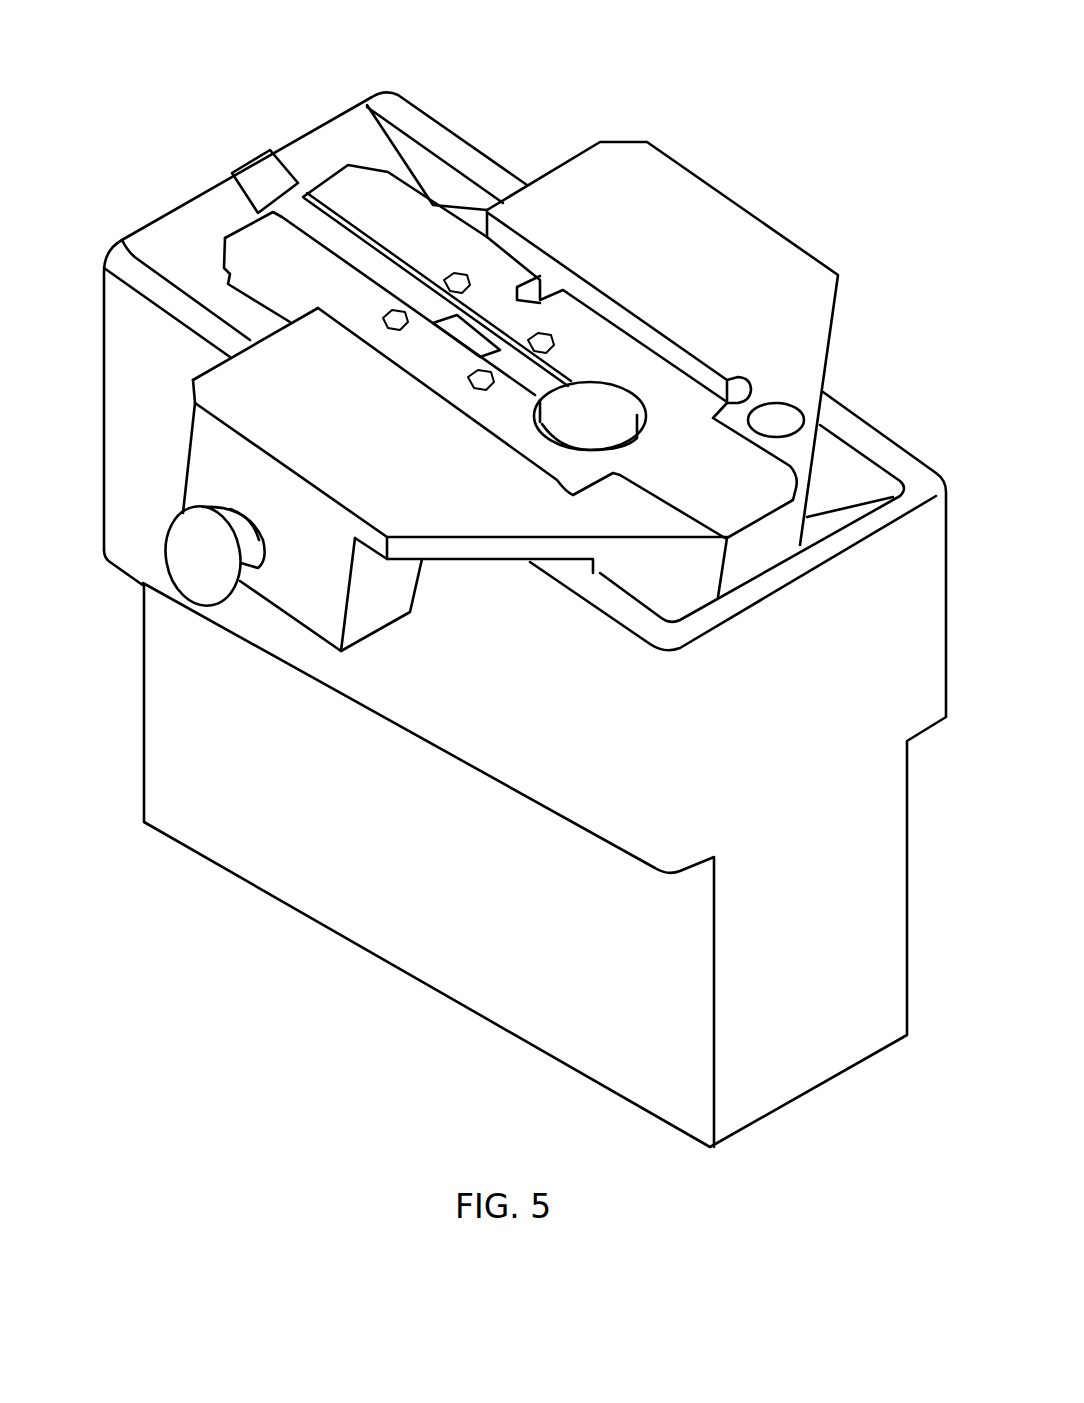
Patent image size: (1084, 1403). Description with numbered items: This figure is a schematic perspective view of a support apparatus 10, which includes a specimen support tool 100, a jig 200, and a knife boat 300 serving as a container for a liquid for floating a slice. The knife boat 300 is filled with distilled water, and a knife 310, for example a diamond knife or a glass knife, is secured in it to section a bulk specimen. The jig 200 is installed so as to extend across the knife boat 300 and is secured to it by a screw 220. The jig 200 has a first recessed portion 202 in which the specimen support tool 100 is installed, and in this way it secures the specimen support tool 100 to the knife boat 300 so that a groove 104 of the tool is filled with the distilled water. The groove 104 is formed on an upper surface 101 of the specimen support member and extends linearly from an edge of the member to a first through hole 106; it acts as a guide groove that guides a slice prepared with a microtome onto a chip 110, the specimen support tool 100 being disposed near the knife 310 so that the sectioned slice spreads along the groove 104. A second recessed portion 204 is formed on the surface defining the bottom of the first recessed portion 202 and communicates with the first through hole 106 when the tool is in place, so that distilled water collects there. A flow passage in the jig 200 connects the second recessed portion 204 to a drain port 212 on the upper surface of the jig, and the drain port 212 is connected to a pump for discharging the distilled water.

The support apparatus 10 is at (760, 72).
The specimen support tool 100 is at (400, 215).
The upper surface 101 is at (437, 232).
The groove 104 is at (347, 252).
The first through hole 106 is at (575, 388).
The chip 110 is at (455, 278).
The jig 200 is at (662, 360).
The first recessed portion 202 is at (550, 295).
The second recessed portion 204 is at (607, 418).
The drain port 212 is at (780, 420).
The screw 220 is at (182, 542).
The knife boat 300 is at (325, 150).
The knife 310 is at (255, 175).